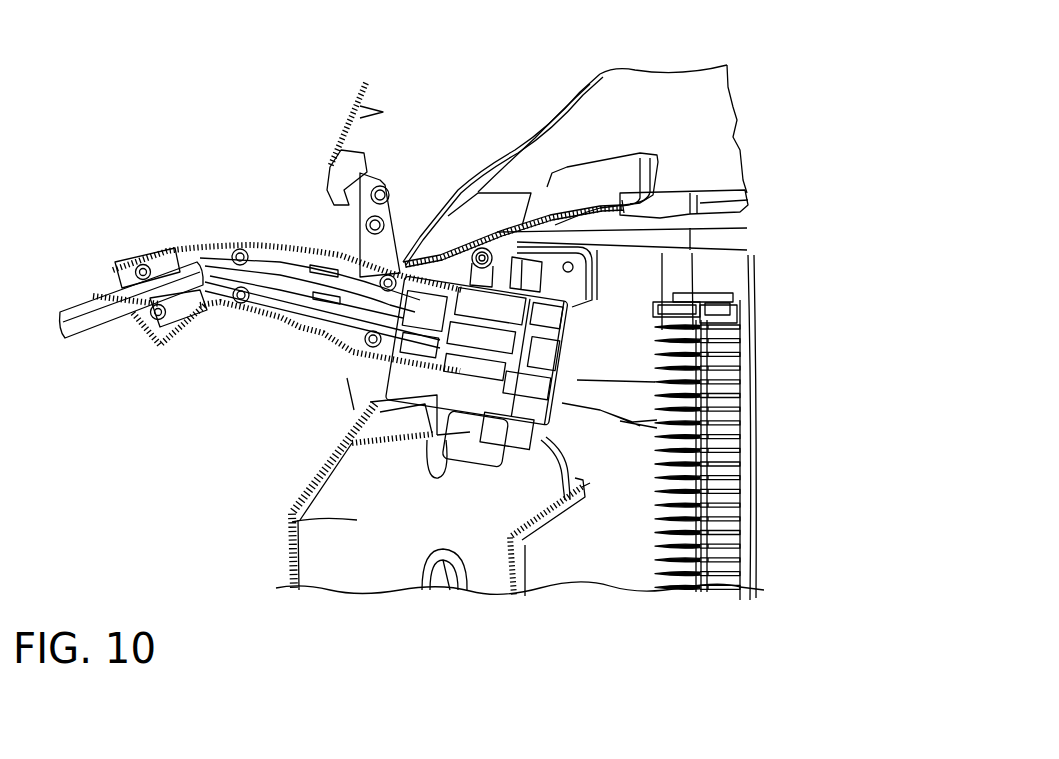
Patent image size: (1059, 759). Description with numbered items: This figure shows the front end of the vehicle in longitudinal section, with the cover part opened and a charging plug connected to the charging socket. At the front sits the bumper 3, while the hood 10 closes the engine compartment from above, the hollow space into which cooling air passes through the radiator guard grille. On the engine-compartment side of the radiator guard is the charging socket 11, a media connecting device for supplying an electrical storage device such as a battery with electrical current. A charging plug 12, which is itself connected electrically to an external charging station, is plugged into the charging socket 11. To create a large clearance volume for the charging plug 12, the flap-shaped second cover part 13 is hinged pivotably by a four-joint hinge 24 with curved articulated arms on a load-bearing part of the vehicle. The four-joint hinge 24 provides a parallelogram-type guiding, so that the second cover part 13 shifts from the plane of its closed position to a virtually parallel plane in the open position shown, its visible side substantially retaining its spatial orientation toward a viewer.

The bumper 3 is at (290, 549).
The hood 10 is at (670, 88).
The charging socket 11 is at (565, 329).
The charging plug 12 is at (330, 324).
The second cover part 13 is at (355, 103).
The four-joint hinge 24 is at (355, 241).